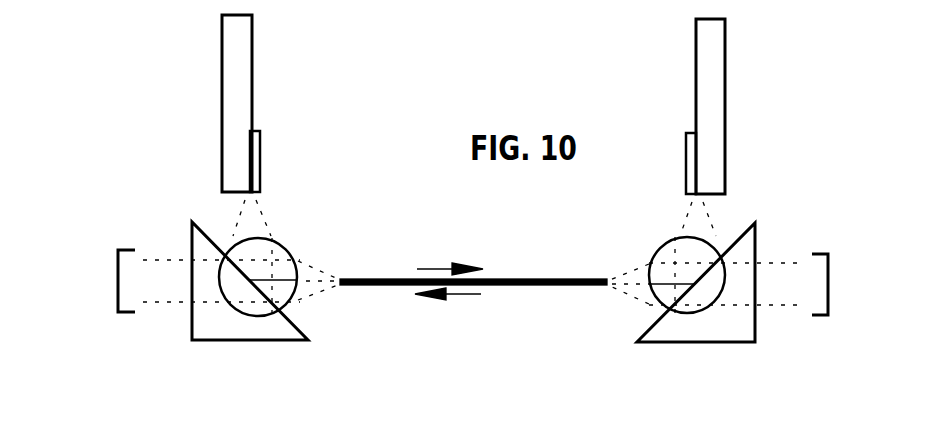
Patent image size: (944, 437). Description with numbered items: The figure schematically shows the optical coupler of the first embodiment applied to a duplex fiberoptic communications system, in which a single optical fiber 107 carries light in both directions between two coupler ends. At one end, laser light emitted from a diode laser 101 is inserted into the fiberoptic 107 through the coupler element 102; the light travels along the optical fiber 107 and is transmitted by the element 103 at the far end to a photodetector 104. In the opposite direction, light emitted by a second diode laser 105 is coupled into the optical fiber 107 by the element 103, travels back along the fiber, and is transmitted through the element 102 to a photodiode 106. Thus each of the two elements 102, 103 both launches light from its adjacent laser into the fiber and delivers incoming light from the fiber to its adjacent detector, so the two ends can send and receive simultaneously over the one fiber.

The diode laser 101 is at (262, 145).
The element 102 is at (225, 340).
The element 103 is at (678, 342).
The photodetector 104 is at (828, 280).
The diode laser 105 is at (725, 112).
The photodiode 106 is at (115, 272).
The optical fiber 107 is at (517, 279).